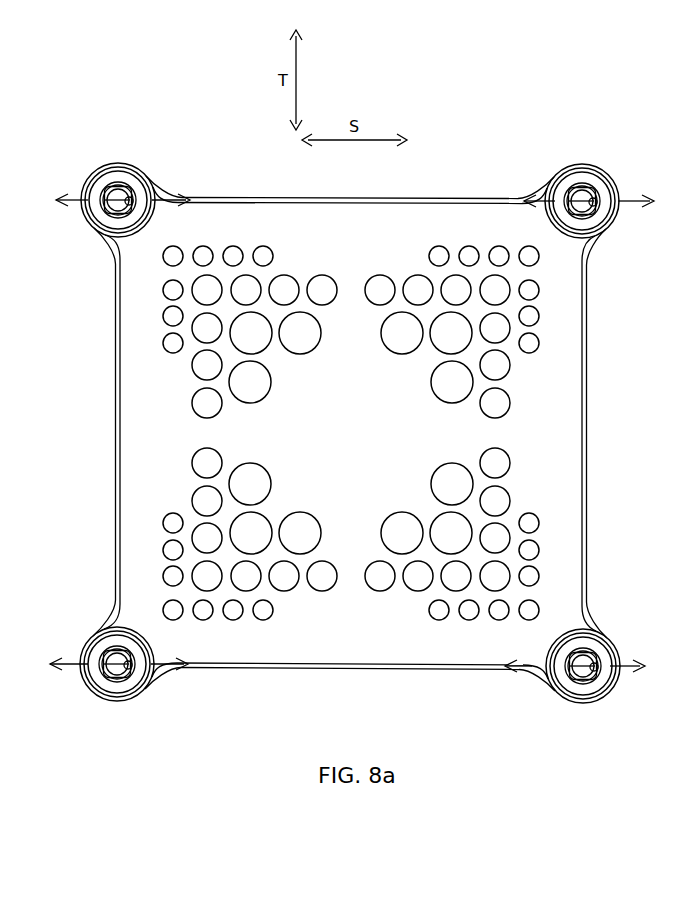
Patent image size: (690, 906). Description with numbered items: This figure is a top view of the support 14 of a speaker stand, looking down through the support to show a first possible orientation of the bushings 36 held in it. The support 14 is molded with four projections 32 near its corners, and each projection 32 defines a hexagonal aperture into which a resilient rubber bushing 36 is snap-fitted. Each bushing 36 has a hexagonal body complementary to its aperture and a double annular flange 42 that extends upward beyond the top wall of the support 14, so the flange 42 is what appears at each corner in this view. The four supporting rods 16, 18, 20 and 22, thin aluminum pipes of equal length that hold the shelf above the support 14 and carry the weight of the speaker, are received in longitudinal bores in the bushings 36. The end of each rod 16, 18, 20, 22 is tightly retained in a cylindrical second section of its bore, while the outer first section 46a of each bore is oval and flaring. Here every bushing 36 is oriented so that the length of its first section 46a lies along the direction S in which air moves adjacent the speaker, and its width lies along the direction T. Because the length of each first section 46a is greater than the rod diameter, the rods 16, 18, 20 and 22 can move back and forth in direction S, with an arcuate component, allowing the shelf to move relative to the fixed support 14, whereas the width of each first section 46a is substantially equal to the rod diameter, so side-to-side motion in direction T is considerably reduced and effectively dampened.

The support 14 is at (548, 430).
The supporting rod 16 is at (112, 650).
The supporting rod 18 is at (112, 188).
The supporting rod 20 is at (588, 190).
The supporting rod 22 is at (581, 662).
The projection 32 is at (128, 163).
The bushing 36 is at (113, 226).
The double annular flange 42 is at (597, 237).
The first section of bore 46a is at (135, 190).